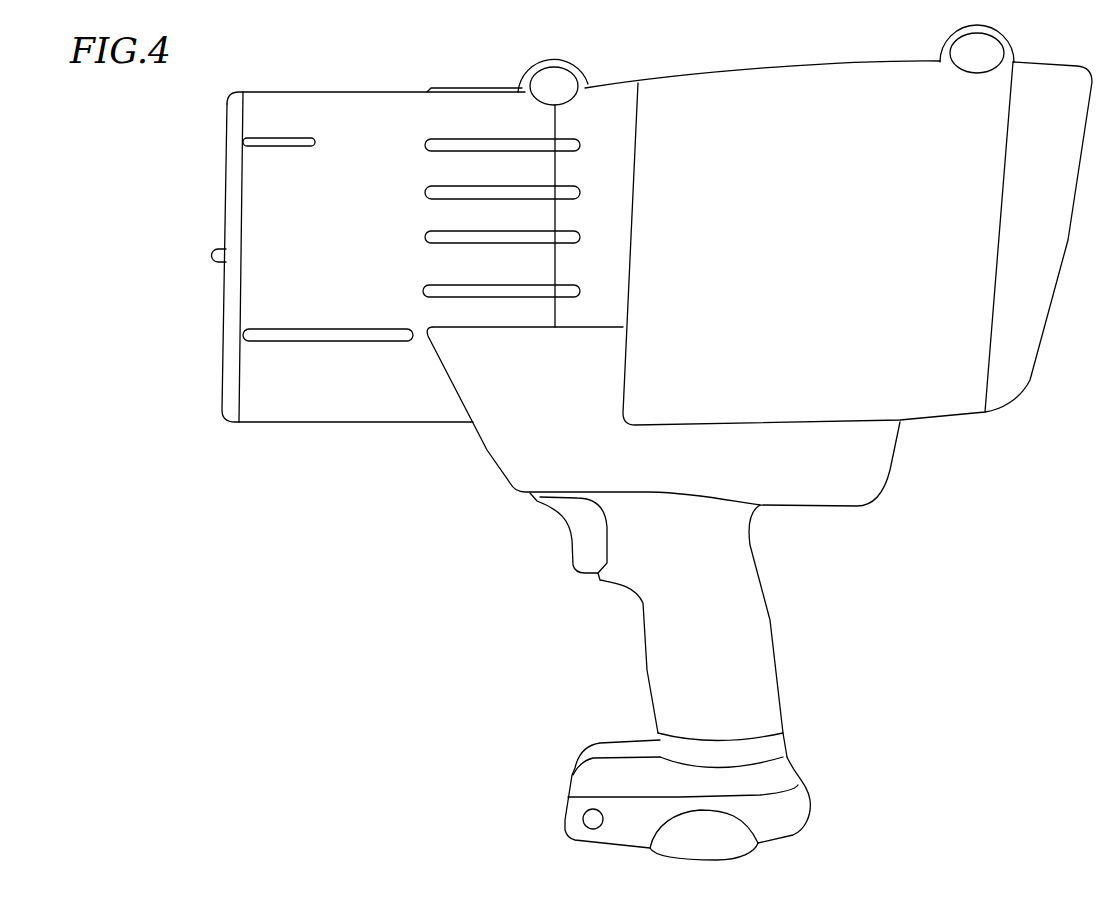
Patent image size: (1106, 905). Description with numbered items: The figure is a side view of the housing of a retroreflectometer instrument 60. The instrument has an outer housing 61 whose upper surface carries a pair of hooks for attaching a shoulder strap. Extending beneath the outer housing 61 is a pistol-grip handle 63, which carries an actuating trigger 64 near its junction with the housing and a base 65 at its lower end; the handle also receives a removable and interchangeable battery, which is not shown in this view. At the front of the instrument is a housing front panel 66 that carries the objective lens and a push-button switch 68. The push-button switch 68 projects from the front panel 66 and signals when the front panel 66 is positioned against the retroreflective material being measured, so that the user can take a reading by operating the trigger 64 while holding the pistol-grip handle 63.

The retroreflectometer instrument 60 is at (455, 533).
The outer housing 61 is at (754, 77).
The pistol-grip handle 63 is at (745, 617).
The actuating trigger 64 is at (565, 537).
The base 65 is at (778, 815).
The housing front panel 66 is at (225, 302).
The push-button switch 68 is at (213, 255).